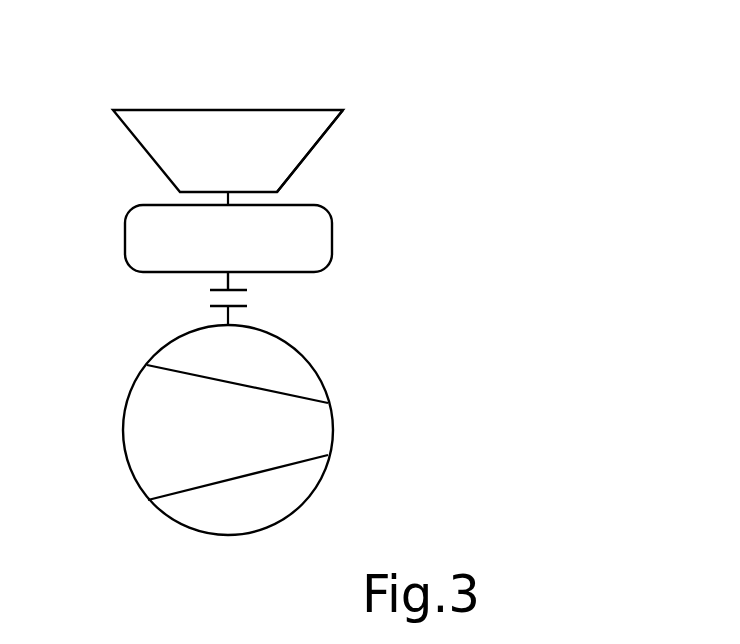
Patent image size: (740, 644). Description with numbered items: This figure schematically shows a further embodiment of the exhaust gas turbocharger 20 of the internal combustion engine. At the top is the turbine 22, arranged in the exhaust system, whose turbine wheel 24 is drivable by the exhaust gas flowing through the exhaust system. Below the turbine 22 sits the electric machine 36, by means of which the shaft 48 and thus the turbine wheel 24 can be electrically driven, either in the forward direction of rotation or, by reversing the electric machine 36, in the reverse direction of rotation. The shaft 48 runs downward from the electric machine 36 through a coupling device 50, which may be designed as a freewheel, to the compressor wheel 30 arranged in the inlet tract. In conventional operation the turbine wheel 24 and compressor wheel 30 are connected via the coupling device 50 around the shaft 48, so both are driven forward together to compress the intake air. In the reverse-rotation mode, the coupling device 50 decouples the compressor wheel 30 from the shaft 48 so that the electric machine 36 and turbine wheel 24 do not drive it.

The exhaust gas turbocharger 20 is at (120, 461).
The turbine 22 is at (304, 97).
The turbine wheel 24 is at (307, 155).
The compressor wheel 30 is at (332, 428).
The electric machine 36 is at (340, 238).
The shaft 48 is at (232, 283).
The coupling device 50 is at (205, 300).